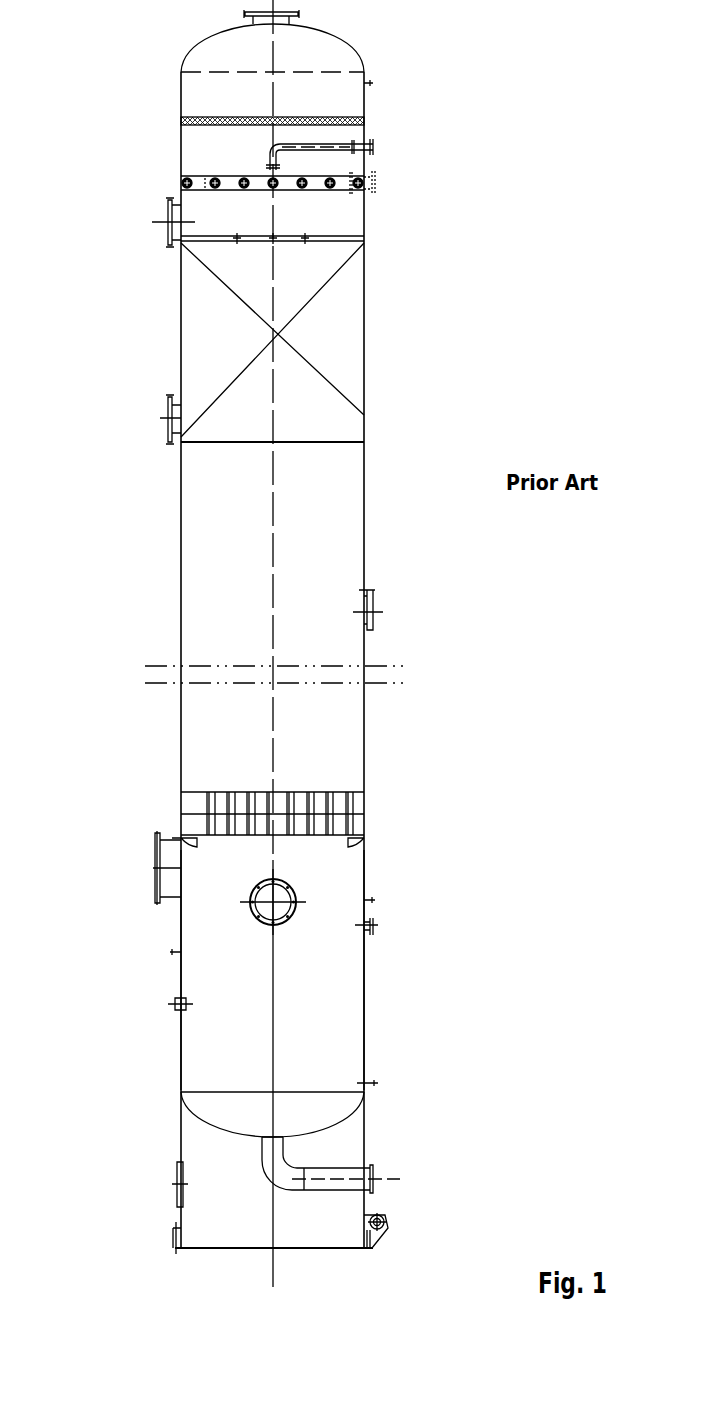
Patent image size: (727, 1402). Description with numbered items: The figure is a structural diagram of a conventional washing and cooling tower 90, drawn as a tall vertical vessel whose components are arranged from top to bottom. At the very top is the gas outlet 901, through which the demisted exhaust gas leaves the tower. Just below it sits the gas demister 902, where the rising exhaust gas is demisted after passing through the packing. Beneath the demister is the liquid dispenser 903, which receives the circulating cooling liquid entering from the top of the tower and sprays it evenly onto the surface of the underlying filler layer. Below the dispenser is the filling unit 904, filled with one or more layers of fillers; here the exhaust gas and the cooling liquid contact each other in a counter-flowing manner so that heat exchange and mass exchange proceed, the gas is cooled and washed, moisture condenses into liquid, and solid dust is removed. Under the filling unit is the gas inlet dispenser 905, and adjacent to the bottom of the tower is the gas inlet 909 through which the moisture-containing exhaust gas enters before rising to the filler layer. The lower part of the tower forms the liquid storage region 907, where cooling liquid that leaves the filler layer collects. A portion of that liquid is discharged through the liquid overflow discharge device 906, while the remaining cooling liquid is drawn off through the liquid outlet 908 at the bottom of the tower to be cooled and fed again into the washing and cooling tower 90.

The washing and cooling tower 90 is at (75, 284).
The gas outlet 901 is at (289, 22).
The gas demister 902 is at (362, 118).
The liquid dispenser 903 is at (360, 188).
The filling unit 904 is at (353, 338).
The gas inlet dispenser 905 is at (311, 820).
The liquid overflow discharge device 906 is at (377, 918).
The liquid storage region 907 is at (335, 1020).
The liquid outlet 908 is at (330, 1175).
The gas inlet 909 is at (156, 852).